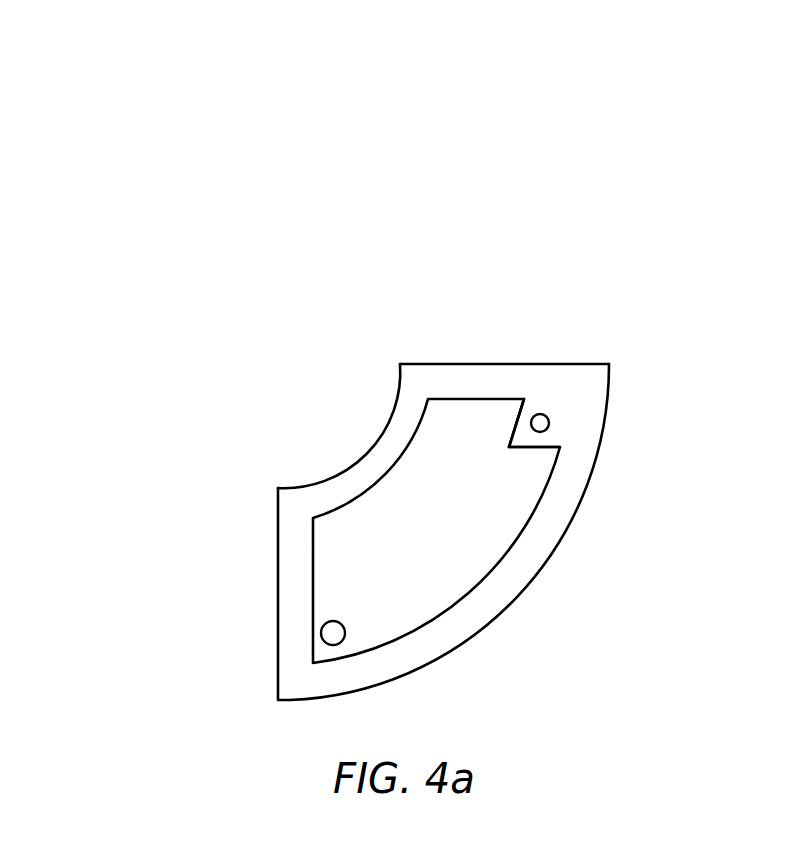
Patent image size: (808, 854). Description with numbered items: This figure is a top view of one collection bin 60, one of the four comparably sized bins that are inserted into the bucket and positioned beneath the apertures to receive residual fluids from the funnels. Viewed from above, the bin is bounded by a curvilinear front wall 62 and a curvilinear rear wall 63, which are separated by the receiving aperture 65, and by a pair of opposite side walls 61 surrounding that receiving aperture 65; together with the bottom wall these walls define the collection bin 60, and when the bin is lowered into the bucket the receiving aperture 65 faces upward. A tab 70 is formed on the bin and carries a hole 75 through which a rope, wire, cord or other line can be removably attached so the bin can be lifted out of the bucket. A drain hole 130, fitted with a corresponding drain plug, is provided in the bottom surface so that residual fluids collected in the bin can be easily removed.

The collection bin 60 is at (708, 232).
The side walls 61 is at (499, 364).
The front wall 62 is at (358, 453).
The rear wall 63 is at (505, 612).
The receiving aperture 65 is at (442, 509).
The tab 70 is at (547, 441).
The hole 75 is at (544, 415).
The drain hole 130 is at (333, 633).